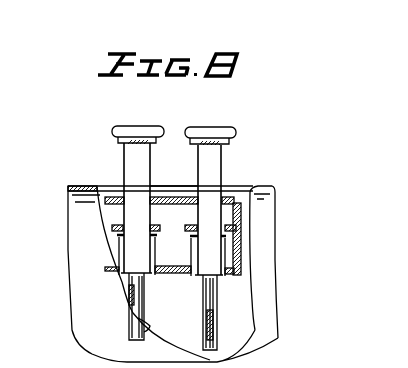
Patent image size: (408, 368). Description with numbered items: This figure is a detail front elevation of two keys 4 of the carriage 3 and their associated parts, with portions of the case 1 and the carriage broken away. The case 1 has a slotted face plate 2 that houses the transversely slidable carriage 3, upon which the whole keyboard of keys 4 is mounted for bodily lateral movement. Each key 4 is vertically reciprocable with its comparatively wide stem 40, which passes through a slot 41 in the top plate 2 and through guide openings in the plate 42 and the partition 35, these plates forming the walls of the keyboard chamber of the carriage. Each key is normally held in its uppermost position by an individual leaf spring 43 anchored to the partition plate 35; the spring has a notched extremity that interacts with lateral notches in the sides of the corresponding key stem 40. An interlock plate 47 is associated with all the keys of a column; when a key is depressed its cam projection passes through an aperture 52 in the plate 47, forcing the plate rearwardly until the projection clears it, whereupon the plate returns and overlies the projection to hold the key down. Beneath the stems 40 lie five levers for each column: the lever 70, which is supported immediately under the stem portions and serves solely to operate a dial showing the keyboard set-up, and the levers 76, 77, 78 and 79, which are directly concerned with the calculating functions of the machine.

The case 1 is at (83, 208).
The face plate 2 is at (255, 182).
The carriage 3 is at (280, 273).
The key 4 is at (128, 127).
The partition 35 is at (107, 268).
The key stem 40 is at (136, 170).
The slot 41 is at (105, 183).
The plate 42 is at (103, 207).
The leaf spring 43 is at (118, 258).
The interlock plate 47 is at (112, 229).
The aperture 52 is at (150, 220).
The lever 70 is at (146, 295).
The lever 76 is at (128, 272).
The lever 77 is at (128, 288).
The lever 78 is at (136, 315).
The lever 79 is at (143, 331).